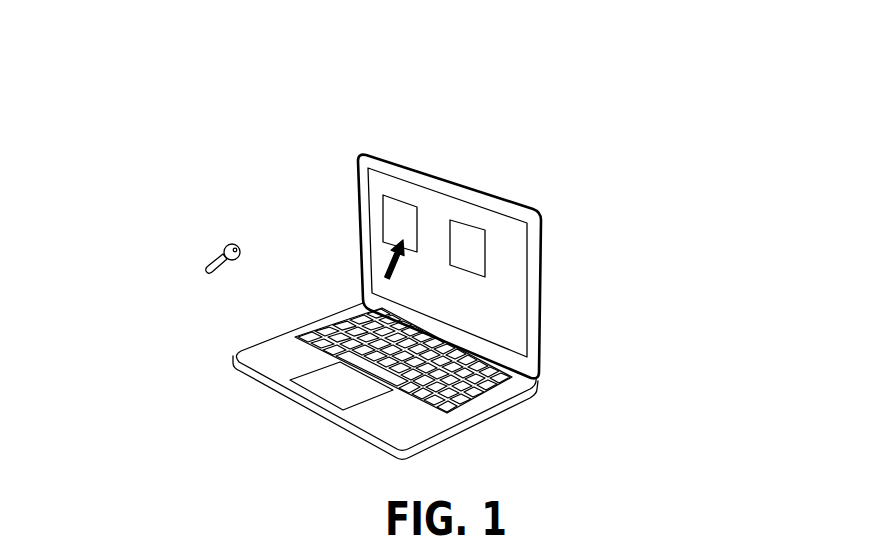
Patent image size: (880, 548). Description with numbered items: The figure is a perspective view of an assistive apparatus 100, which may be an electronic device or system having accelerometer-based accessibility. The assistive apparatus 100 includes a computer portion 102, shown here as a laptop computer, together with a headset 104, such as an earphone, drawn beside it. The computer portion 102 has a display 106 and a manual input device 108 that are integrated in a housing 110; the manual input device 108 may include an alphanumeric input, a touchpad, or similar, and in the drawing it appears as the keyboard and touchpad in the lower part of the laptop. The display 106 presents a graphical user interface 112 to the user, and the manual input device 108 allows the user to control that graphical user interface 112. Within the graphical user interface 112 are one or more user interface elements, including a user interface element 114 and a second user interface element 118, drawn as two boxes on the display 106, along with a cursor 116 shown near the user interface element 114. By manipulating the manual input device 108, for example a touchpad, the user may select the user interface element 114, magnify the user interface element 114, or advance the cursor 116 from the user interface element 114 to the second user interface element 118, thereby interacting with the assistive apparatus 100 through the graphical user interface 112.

The assistive apparatus 100 is at (605, 90).
The computer portion 102 is at (552, 361).
The headset 104 is at (207, 234).
The display 106 is at (510, 315).
The manual input device 108 is at (322, 319).
The housing 110 is at (443, 182).
The graphical user interface 112 is at (507, 277).
The user interface element 114 is at (397, 195).
The cursor 116 is at (386, 274).
The second user interface element 118 is at (470, 225).